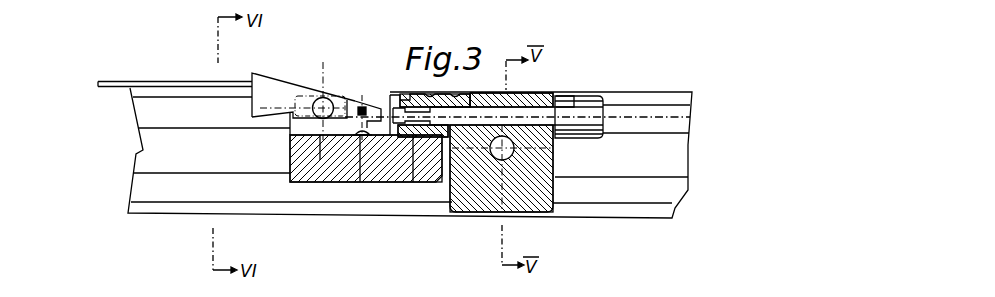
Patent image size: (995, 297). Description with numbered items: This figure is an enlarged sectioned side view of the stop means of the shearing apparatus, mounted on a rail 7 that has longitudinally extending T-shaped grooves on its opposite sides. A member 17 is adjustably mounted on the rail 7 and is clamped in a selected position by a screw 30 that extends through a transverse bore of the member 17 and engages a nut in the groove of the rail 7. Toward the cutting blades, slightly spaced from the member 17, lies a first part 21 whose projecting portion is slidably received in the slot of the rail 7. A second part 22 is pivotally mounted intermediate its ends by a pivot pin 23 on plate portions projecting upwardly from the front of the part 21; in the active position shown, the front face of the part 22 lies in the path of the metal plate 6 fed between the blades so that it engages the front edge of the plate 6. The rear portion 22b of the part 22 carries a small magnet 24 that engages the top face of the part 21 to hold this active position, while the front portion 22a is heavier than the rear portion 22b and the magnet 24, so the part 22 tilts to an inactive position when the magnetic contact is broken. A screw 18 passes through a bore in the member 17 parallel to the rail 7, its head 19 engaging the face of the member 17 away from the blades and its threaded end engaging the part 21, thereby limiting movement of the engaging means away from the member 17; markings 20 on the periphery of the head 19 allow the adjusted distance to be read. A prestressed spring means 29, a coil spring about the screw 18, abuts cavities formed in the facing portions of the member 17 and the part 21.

The metal plate 6 is at (158, 83).
The rail 7 is at (620, 195).
The member 17 is at (533, 190).
The screw 18 is at (513, 110).
The head 19 is at (578, 105).
The markings 20 is at (561, 107).
The first part 21 is at (407, 165).
The second part 22 is at (313, 143).
The front portion 22a is at (274, 80).
The rear portion 22b is at (370, 108).
The pivot pin 23 is at (325, 97).
The small magnet 24 is at (348, 128).
The prestressed spring means 29 is at (470, 95).
The screw 30 is at (497, 160).